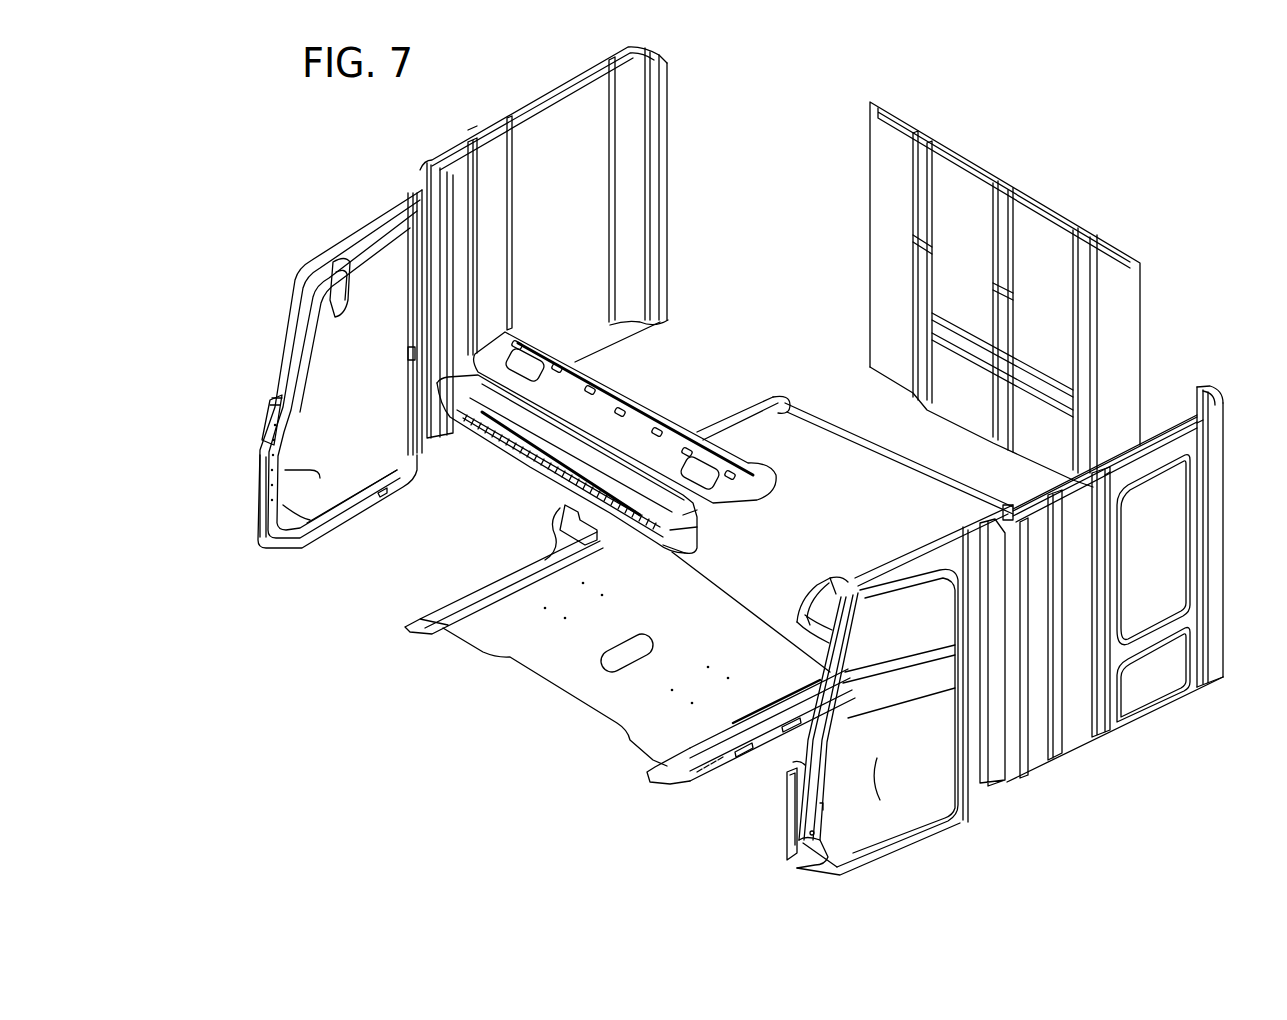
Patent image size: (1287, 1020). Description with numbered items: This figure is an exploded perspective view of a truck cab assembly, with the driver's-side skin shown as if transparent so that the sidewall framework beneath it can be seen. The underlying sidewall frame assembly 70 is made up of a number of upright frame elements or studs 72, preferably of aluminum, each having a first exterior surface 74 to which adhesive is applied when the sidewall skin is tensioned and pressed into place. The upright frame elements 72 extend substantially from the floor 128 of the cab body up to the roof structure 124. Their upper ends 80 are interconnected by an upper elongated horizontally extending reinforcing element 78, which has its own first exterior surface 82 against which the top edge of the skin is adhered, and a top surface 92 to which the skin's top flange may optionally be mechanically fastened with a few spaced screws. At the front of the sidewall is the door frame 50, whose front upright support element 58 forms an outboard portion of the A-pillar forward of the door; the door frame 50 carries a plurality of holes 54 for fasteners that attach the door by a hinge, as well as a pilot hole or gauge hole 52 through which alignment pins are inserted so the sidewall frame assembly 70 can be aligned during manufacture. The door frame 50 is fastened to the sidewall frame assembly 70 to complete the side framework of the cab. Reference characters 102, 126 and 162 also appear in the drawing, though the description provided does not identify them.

The door frame 50 is at (271, 369).
The pilot hole or gauge hole 52 is at (797, 850).
The holes 54 is at (283, 505).
The front upright support element 58 is at (277, 400).
The sidewall frame assembly 70 is at (849, 436).
The upright frame elements 72 is at (603, 150).
The first exterior surface 74 is at (1107, 560).
The upper elongated horizontally extending reinforcing element 78 is at (535, 100).
The upper ends 80 is at (468, 130).
The first exterior surface 82 is at (1167, 442).
The top surface 92 is at (1013, 515).
The door opening lower corner 102 is at (318, 470).
The roof structure 124 is at (605, 415).
The rear wall panel 126 is at (1058, 258).
The floor 128 is at (563, 665).
The pillar reinforcement 162 is at (258, 512).